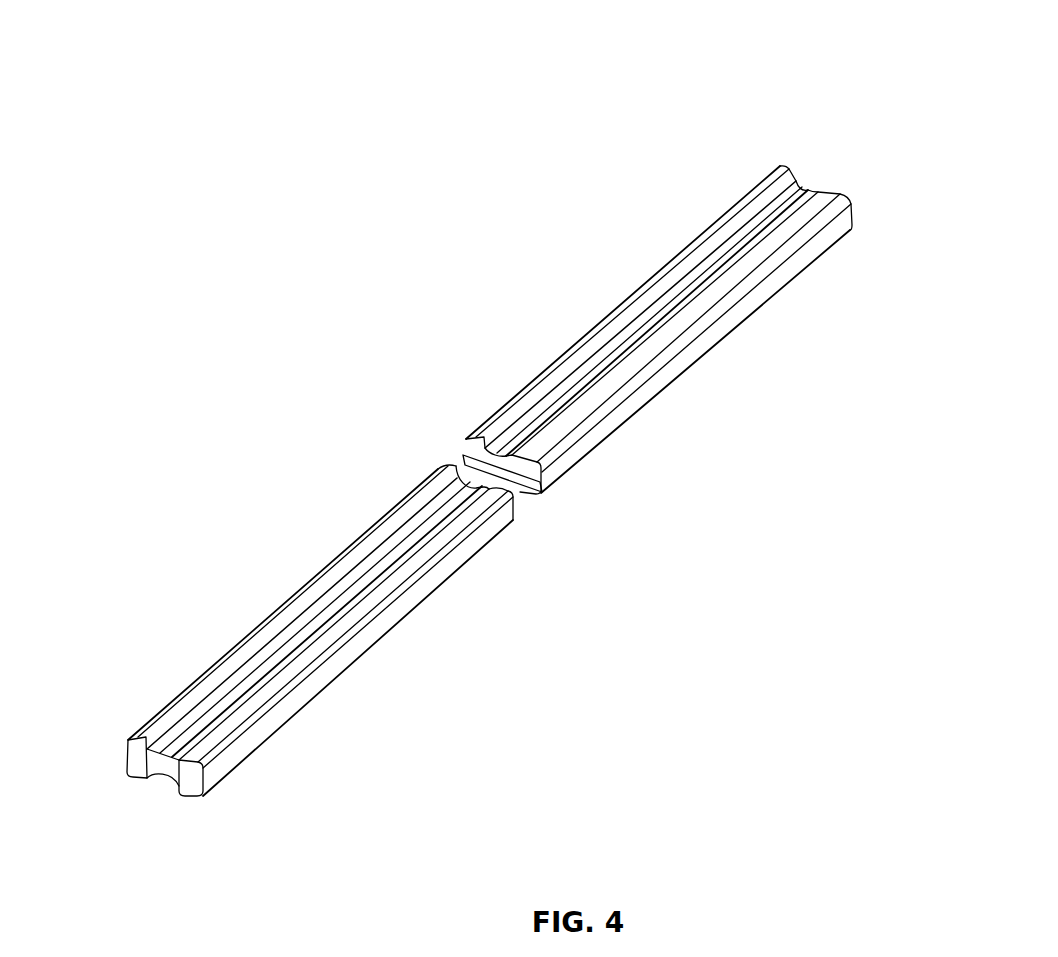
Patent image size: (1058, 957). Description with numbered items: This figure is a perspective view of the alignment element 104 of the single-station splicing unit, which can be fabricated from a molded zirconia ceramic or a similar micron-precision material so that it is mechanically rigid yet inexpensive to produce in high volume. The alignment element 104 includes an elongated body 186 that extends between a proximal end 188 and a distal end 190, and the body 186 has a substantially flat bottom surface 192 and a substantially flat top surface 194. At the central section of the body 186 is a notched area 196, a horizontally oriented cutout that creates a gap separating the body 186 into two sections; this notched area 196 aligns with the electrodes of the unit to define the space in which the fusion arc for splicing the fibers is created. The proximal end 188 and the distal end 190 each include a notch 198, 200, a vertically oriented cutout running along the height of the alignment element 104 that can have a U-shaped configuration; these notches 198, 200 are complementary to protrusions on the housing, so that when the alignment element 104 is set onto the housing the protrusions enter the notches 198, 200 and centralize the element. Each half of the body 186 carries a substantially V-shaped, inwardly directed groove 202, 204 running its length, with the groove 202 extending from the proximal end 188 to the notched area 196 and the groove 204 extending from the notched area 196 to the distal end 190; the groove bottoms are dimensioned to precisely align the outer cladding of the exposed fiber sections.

The alignment element 104 is at (836, 52).
The elongated body 186 is at (320, 697).
The proximal end 188 is at (131, 752).
The distal end 190 is at (842, 193).
The bottom surface 192 is at (528, 498).
The top surface 194 is at (323, 594).
The notched area 196 is at (463, 468).
The notch 198 is at (164, 777).
The notch 200 is at (798, 180).
The groove 202 is at (212, 696).
The groove 204 is at (578, 390).